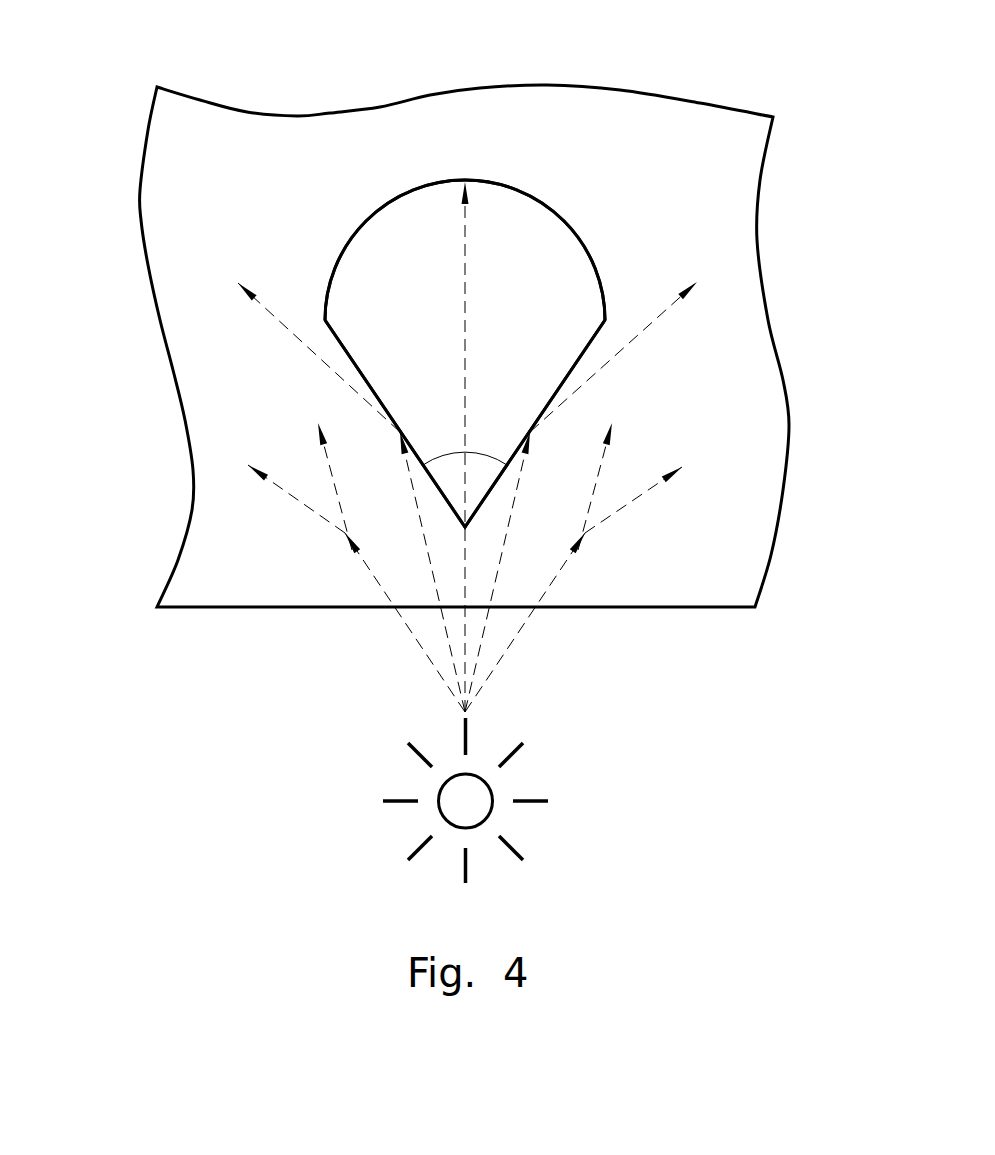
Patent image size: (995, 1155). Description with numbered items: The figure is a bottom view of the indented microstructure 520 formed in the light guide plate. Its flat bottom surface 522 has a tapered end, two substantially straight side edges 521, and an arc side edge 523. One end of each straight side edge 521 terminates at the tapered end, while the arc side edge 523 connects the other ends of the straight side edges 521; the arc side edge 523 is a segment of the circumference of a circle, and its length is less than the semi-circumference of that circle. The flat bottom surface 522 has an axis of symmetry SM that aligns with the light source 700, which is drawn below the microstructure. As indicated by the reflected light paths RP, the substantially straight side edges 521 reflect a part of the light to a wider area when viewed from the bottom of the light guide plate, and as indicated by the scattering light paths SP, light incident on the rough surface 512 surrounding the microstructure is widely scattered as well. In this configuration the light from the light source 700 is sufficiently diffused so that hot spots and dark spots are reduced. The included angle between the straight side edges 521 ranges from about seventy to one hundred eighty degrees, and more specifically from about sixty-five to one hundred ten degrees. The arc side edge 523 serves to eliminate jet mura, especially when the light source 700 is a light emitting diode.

The rough surface 512 is at (246, 164).
The indented microstructure 520 is at (560, 194).
The substantially straight side edges 521 is at (533, 427).
The flat bottom surface 522 is at (560, 253).
The arc side edge 523 is at (378, 207).
The light source 700 is at (482, 807).
The axis of symmetry SM is at (463, 130).
The scattering light paths SP is at (377, 582).
The reflected light paths RP is at (460, 233).